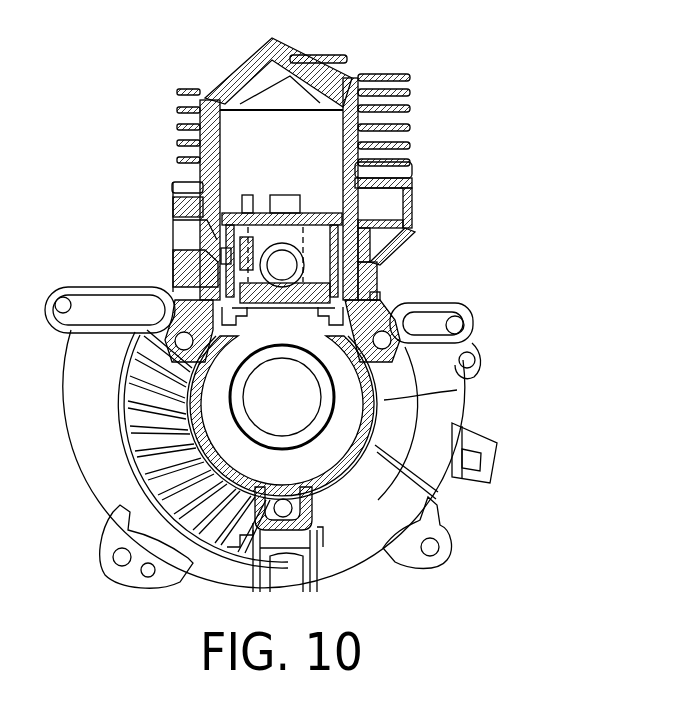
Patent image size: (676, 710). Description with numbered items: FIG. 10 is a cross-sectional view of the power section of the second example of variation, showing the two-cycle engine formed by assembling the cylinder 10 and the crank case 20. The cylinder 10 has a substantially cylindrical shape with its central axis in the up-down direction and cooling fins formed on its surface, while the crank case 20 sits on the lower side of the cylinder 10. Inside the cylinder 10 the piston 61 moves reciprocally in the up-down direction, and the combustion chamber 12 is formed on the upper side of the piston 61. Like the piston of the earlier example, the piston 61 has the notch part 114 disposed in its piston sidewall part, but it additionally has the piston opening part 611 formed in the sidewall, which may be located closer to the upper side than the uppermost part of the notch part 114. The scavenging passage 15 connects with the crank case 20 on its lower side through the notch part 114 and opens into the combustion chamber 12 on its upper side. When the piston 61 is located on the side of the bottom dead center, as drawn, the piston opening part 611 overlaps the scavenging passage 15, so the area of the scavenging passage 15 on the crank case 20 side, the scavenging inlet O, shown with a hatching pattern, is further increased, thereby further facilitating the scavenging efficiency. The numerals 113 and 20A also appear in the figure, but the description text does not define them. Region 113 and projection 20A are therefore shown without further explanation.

The cylinder 10 is at (393, 102).
The combustion chamber 12 is at (330, 146).
The scavenging passage 15 is at (373, 177).
The piston 61 is at (200, 214).
The piston opening part 611 is at (217, 245).
The scavenging inlet O is at (233, 248).
The port 113 is at (361, 254).
The notch part 114 is at (377, 276).
The crankcase projection 20A is at (373, 294).
The crank case 20 is at (462, 392).